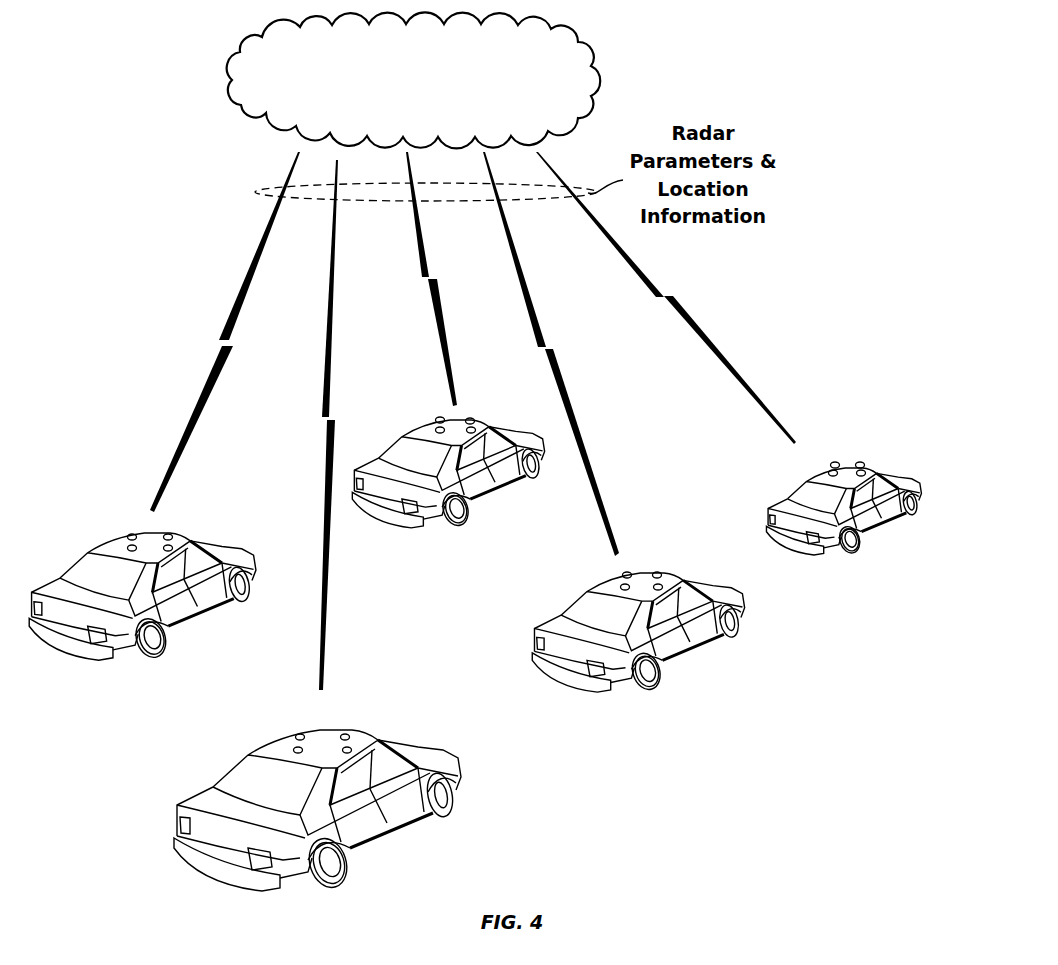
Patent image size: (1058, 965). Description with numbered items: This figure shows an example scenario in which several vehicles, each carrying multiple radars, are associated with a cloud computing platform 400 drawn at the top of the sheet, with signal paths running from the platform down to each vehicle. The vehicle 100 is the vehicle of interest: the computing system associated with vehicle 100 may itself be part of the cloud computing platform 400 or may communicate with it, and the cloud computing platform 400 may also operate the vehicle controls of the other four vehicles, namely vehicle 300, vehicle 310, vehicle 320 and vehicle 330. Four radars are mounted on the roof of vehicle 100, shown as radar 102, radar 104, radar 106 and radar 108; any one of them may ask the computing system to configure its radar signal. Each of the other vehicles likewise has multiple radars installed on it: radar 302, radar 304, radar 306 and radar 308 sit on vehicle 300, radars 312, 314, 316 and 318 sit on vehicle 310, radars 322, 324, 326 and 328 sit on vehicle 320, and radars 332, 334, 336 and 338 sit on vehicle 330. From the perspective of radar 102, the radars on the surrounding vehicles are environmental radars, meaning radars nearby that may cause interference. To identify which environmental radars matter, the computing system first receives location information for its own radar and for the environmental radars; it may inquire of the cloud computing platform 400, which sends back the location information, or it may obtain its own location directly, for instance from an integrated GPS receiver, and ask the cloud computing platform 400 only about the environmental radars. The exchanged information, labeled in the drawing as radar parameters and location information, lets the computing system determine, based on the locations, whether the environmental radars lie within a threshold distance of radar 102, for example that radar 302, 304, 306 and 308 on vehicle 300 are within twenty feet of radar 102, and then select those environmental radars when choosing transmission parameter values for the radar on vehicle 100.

The cloud computing platform 400 is at (426, 106).
The vehicle 100 is at (395, 815).
The radar 102 is at (296, 748).
The radar 104 is at (300, 734).
The radar 106 is at (345, 734).
The radar 108 is at (351, 750).
The vehicle 300 is at (213, 605).
The radar 302 is at (130, 547).
The radar 304 is at (131, 535).
The radar 306 is at (169, 535).
The radar 308 is at (172, 548).
The vehicle 310 is at (505, 477).
The radar sensor 312 is at (436, 428).
The radar sensor 314 is at (439, 418).
The radar sensor 316 is at (470, 419).
The radar sensor 318 is at (475, 429).
The vehicle 320 is at (893, 506).
The radar sensor 322 is at (830, 472).
The radar sensor 324 is at (835, 463).
The radar sensor 326 is at (860, 463).
The radar sensor 328 is at (864, 472).
The vehicle 330 is at (702, 632).
The radar sensor 332 is at (622, 585).
The radar sensor 334 is at (627, 572).
The radar sensor 336 is at (658, 572).
The radar sensor 338 is at (662, 586).